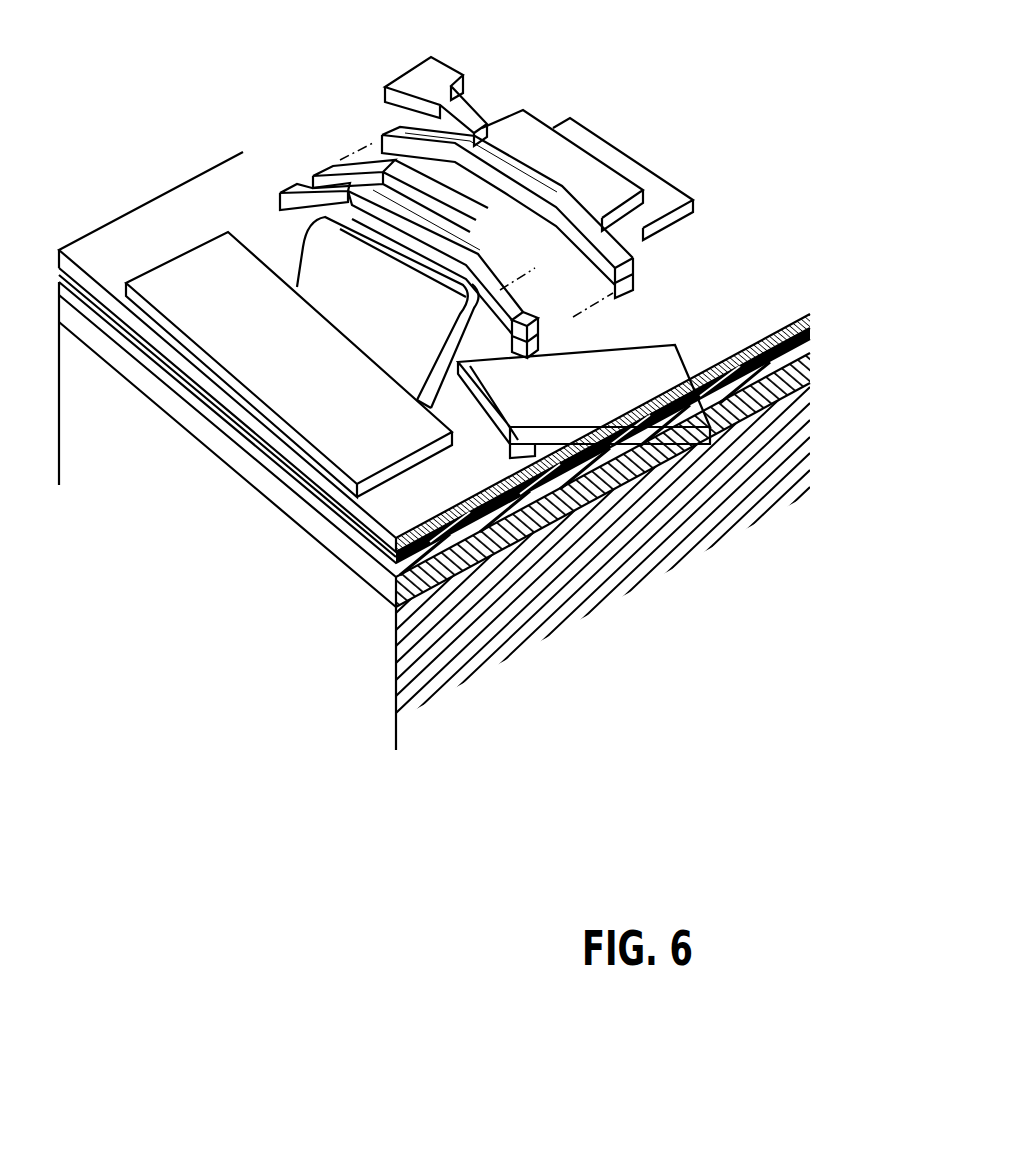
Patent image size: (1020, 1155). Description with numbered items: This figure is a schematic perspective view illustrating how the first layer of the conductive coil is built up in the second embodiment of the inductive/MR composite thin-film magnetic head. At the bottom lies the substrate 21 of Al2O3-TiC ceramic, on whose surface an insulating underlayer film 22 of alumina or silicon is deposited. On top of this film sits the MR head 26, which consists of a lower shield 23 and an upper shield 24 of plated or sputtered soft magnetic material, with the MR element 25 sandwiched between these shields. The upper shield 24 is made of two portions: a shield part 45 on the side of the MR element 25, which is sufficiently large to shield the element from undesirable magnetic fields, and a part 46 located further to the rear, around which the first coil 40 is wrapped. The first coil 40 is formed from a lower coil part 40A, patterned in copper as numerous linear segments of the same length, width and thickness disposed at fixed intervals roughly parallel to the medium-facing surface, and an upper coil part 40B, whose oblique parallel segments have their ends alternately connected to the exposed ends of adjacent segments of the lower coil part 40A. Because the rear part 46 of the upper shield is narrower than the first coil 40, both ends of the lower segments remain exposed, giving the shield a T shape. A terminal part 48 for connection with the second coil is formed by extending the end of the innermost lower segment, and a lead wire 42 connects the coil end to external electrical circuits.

The substrate 21 is at (363, 648).
The insulating underlayer film 22 is at (360, 558).
The lower shield 23 is at (293, 480).
The upper shield 24 is at (270, 443).
The MR element 25 is at (434, 352).
The MR head 26 is at (434, 367).
The first coil 40 is at (406, 224).
The lower coil part 40A is at (288, 187).
The upper coil part 40B is at (365, 200).
The lead wire 42 is at (637, 353).
The shield part 45 is at (215, 263).
The rear part of the upper shield 46 is at (483, 192).
The terminal part 48 is at (430, 57).